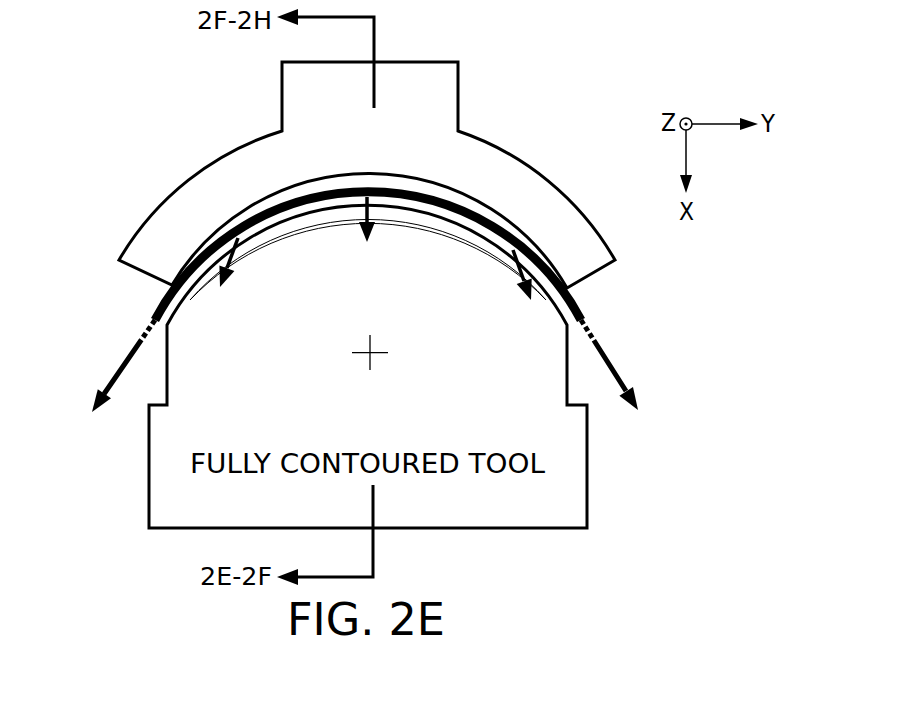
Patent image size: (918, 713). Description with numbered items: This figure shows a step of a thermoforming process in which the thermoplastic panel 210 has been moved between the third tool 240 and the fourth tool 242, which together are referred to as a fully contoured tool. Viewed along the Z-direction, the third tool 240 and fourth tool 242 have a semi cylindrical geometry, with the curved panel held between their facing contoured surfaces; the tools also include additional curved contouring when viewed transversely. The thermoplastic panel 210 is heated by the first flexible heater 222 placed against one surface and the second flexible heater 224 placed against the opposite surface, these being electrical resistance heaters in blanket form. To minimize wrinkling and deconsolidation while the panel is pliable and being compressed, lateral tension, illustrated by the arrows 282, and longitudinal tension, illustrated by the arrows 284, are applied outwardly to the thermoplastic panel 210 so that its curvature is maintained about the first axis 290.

The thermoplastic panel 210 is at (487, 232).
The first flexible heater 222 is at (322, 197).
The second flexible heater 224 is at (316, 210).
The third tool 240 is at (389, 160).
The fourth tool 242 is at (385, 431).
The arrows 282 is at (118, 369).
The arrows 284 is at (219, 265).
The first axis 290 is at (372, 355).